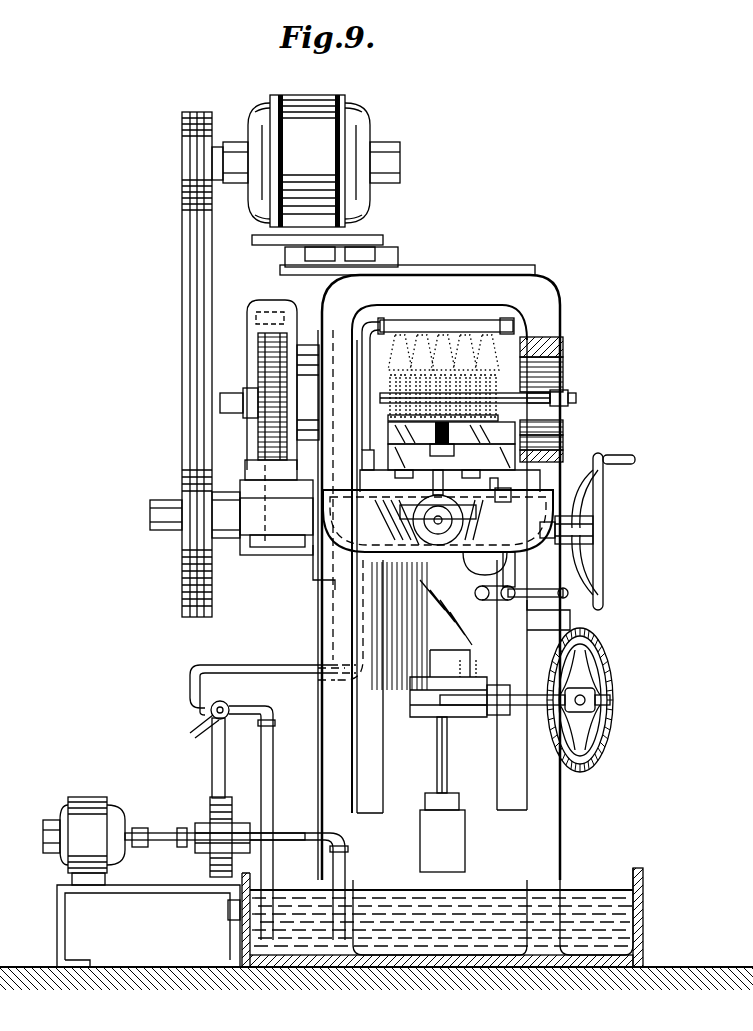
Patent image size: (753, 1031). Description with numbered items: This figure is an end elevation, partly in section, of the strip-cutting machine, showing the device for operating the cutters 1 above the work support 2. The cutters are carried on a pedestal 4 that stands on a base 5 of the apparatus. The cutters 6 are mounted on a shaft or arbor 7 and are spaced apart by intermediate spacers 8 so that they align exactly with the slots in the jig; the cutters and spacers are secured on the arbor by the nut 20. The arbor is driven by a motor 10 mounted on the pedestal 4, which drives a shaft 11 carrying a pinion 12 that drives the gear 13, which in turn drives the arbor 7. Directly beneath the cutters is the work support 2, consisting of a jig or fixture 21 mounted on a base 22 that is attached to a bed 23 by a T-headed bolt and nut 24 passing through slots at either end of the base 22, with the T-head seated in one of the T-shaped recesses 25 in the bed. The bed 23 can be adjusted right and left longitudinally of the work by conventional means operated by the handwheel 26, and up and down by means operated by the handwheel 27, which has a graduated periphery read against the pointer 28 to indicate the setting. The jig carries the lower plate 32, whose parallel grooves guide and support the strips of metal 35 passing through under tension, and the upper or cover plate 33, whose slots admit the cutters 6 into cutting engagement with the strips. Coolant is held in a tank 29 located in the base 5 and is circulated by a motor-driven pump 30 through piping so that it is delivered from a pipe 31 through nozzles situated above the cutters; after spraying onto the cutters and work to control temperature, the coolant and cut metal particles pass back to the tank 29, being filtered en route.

The device for operating the cutters 1 is at (562, 340).
The work support 2 is at (388, 453).
The pedestal 4 is at (562, 812).
The base 5 is at (600, 950).
The cutters 6 is at (480, 385).
The shaft or arbor 7 is at (570, 400).
The intermediate spacers 8 is at (540, 392).
The motor 10 is at (368, 108).
The shaft 11 is at (150, 513).
The pinion 12 is at (262, 545).
The gear 13 is at (252, 352).
The nut 20 is at (560, 398).
The jig or fixture 21 is at (535, 428).
The base 22 is at (535, 445).
The bed 23 is at (403, 484).
The T-headed bolt and nut 24 is at (438, 507).
The T-shaped recesses 25 is at (480, 486).
The handwheel 26 is at (605, 500).
The handwheel 27 is at (600, 640).
The pointer 28 is at (516, 591).
The tank 29 is at (596, 880).
The motor-driven pump 30 is at (210, 812).
The pipe 31 is at (448, 322).
The lower plate 32 is at (388, 440).
The upper or cover plate 33 is at (515, 395).
The strips of metal 35 is at (458, 428).